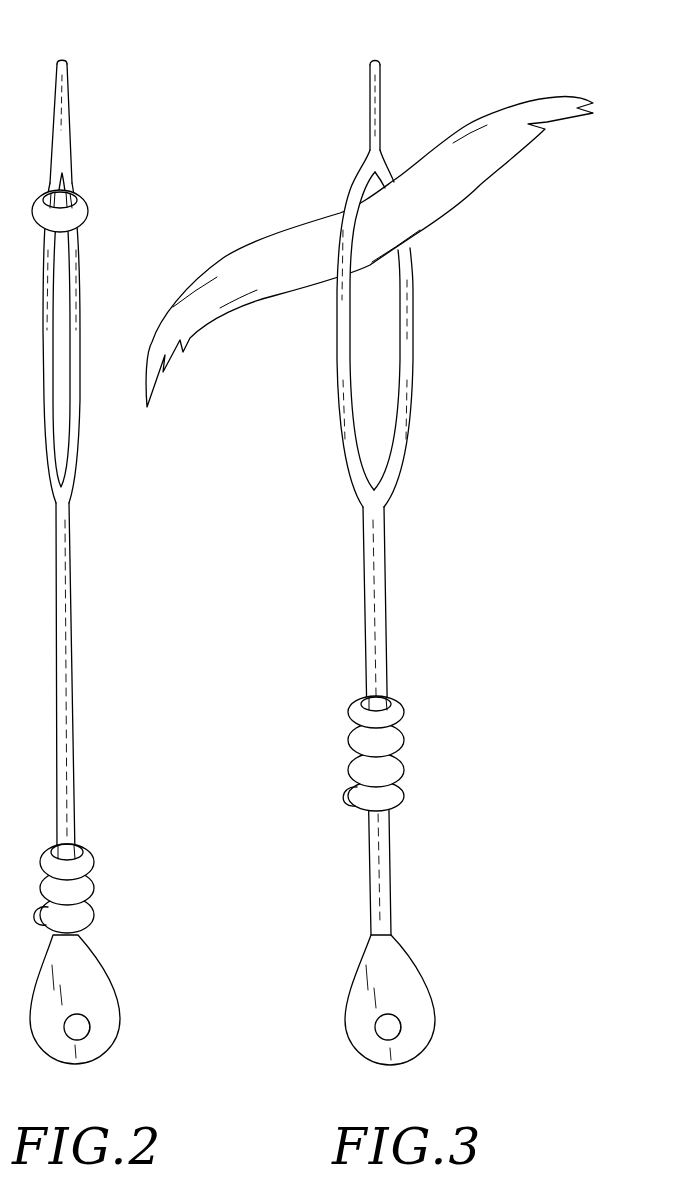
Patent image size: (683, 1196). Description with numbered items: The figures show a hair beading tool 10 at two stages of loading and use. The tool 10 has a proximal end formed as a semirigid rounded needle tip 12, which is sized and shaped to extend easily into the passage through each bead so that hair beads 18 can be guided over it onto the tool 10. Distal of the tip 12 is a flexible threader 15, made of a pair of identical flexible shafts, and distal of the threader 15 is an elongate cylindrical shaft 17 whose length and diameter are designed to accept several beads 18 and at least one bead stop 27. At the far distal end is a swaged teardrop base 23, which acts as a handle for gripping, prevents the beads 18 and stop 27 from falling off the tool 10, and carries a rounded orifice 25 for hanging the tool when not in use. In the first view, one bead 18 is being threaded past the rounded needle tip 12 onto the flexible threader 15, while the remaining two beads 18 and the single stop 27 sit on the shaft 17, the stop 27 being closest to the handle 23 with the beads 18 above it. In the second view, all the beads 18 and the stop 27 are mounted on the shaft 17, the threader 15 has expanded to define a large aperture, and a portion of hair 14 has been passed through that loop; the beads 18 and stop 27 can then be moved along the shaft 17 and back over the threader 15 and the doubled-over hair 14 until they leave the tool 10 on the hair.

In FIG. 2, the tool 10 is at (120, 557).
In FIG. 3, the tool 10 is at (439, 539).
In FIG. 2, the rounded needle tip 12 is at (68, 83).
In FIG. 3, the rounded needle tip 12 is at (382, 70).
In FIG. 3, the hair 14 is at (473, 193).
In FIG. 2, the flexible threader 15 is at (99, 325).
In FIG. 3, the flexible threader 15 is at (418, 422).
In FIG. 2, the elongate cylindrical shaft 17 is at (75, 678).
In FIG. 3, the elongate cylindrical shaft 17 is at (385, 560).
In FIG. 2, the hair beads 18 is at (83, 212).
In FIG. 3, the hair beads 18 is at (405, 762).
In FIG. 2, the teardrop base 23 is at (100, 963).
In FIG. 3, the teardrop base 23 is at (410, 957).
In FIG. 2, the rounded orifice 25 is at (78, 1030).
In FIG. 3, the rounded orifice 25 is at (397, 1030).
In FIG. 2, the bead stop 27 is at (97, 910).
In FIG. 3, the bead stop 27 is at (405, 788).